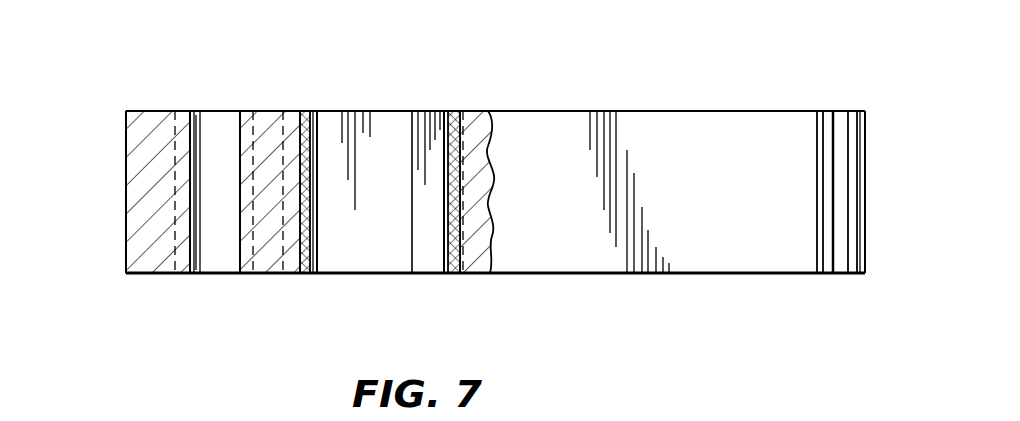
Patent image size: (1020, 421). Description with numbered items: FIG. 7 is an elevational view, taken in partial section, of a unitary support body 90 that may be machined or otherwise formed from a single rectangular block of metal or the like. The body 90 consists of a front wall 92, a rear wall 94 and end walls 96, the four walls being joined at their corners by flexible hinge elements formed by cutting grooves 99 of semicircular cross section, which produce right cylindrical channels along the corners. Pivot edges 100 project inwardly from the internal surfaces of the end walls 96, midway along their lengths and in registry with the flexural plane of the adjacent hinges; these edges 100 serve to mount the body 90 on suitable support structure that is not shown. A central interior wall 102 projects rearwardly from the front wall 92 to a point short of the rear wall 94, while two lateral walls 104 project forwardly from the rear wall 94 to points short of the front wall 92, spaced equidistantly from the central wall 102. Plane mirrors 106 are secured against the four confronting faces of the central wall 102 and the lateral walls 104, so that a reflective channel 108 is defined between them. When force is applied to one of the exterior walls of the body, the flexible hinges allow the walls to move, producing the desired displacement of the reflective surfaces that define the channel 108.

The unitary support body 90 is at (866, 113).
The front wall 92 is at (672, 140).
The rear wall 94 is at (378, 150).
The end wall 96 is at (137, 158).
The groove 99 is at (817, 227).
The pivot edge 100 is at (192, 212).
The central interior wall 102 is at (485, 128).
The lateral wall 104 is at (287, 150).
The plane mirror 106 is at (307, 233).
The reflective channel 108 is at (397, 140).